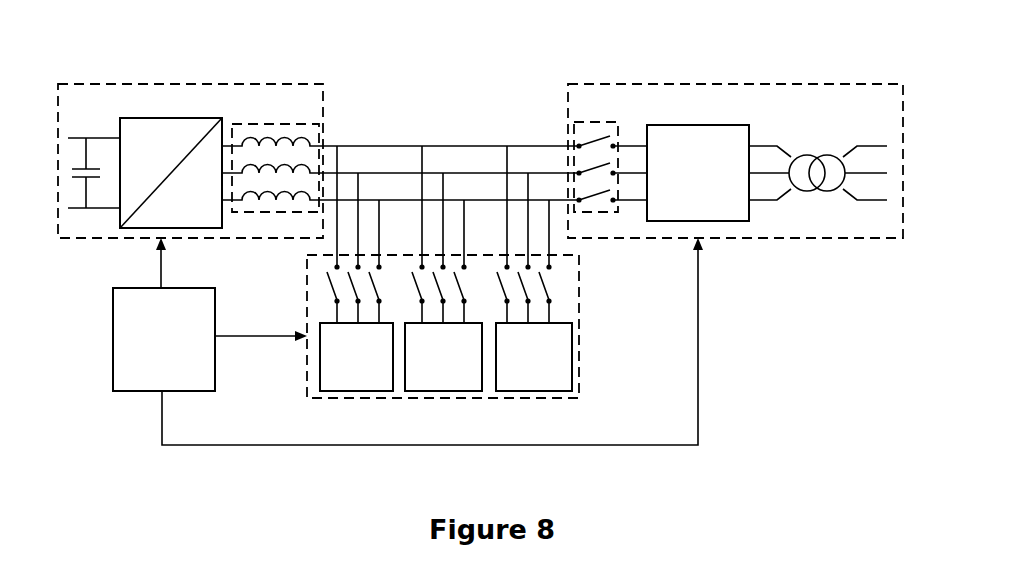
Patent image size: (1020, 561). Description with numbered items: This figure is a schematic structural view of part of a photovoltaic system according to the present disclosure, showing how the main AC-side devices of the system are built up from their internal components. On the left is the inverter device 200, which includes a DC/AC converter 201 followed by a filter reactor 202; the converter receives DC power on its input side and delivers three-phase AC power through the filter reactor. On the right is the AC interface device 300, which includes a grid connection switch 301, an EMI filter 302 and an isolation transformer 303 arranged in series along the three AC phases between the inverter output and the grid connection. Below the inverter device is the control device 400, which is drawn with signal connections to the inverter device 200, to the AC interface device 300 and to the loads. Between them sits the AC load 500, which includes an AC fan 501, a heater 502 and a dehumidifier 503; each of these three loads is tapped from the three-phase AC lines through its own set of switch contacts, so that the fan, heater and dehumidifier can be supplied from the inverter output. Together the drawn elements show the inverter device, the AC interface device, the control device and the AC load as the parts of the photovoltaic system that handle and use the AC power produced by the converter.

The inverter device 200 is at (105, 84).
The DC/AC converter 201 is at (178, 118).
The filter reactor 202 is at (285, 124).
The AC interface device 300 is at (740, 238).
The grid connection switch 301 is at (585, 122).
The EMI filter 302 is at (684, 125).
The isolation transformer 303 is at (809, 157).
The control device 400 is at (182, 391).
The AC load 500 is at (579, 325).
The AC fan 501 is at (363, 391).
The heater 502 is at (454, 391).
The dehumidifier 503 is at (544, 391).